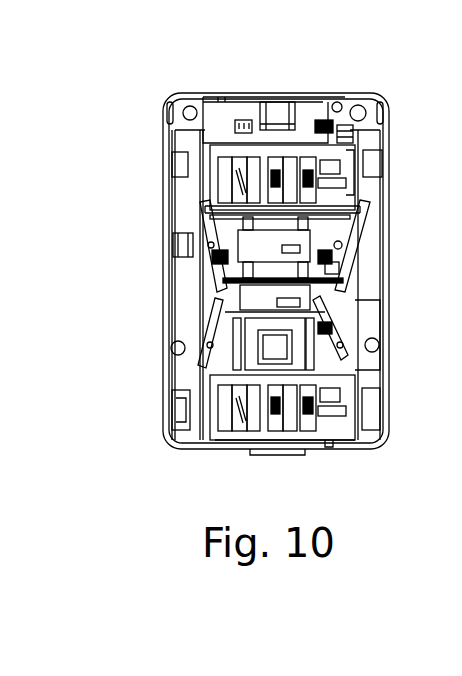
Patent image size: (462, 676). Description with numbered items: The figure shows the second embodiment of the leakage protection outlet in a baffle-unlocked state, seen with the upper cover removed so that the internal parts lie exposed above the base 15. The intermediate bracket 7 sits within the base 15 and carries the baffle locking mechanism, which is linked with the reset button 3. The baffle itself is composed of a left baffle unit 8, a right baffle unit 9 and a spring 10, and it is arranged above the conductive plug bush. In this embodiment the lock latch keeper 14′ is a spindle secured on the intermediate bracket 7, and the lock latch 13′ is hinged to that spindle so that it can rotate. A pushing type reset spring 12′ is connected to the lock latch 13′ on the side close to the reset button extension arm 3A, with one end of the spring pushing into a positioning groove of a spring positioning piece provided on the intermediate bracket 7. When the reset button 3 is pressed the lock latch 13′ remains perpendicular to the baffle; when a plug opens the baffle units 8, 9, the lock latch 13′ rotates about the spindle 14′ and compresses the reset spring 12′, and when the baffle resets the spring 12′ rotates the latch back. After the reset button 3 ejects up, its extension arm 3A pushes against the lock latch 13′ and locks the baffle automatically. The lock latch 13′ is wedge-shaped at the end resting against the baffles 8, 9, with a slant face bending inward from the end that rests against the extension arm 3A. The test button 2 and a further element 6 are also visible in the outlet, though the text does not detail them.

The base 15 is at (178, 104).
The intermediate bracket 7 is at (222, 107).
The spring 10 is at (275, 162).
The left baffle unit 8 is at (223, 148).
The test button 2 is at (255, 217).
The lock latch keeper 14′ is at (200, 243).
The left channel 6 is at (200, 308).
The reset button 3 is at (175, 350).
The right baffle unit 9 is at (342, 155).
The lock latch 13′ is at (350, 250).
The pushing type reset spring 12′ is at (342, 268).
The reset button extension arm 3A is at (348, 300).